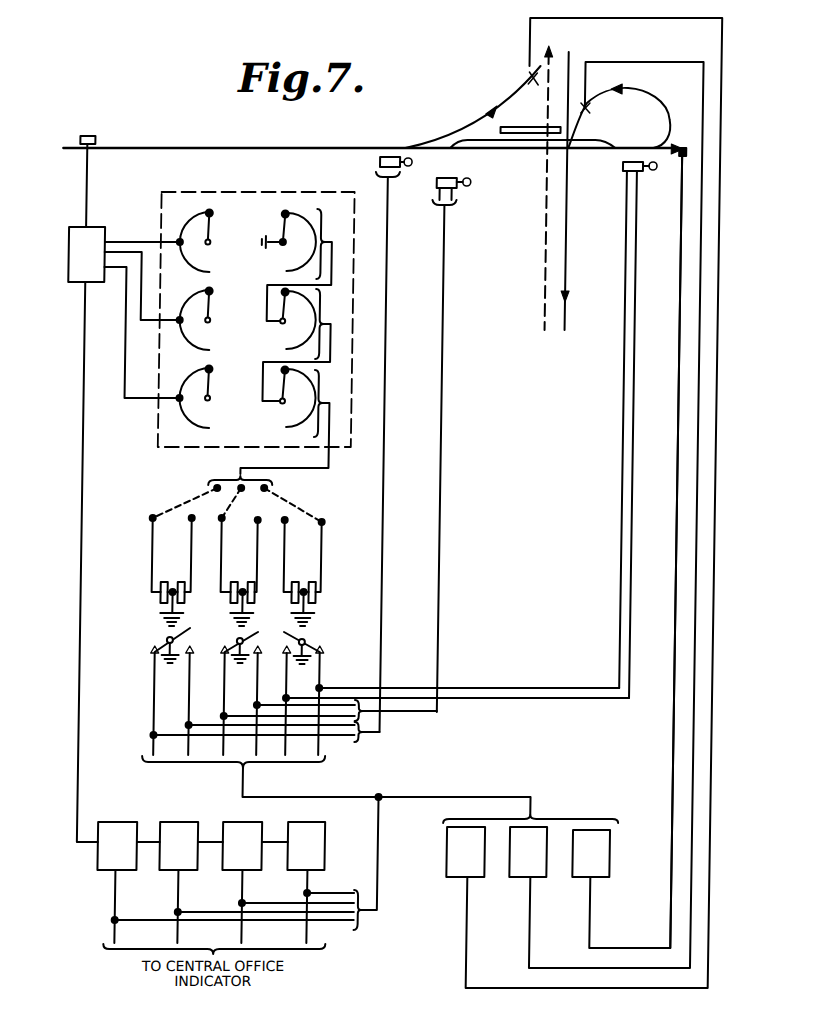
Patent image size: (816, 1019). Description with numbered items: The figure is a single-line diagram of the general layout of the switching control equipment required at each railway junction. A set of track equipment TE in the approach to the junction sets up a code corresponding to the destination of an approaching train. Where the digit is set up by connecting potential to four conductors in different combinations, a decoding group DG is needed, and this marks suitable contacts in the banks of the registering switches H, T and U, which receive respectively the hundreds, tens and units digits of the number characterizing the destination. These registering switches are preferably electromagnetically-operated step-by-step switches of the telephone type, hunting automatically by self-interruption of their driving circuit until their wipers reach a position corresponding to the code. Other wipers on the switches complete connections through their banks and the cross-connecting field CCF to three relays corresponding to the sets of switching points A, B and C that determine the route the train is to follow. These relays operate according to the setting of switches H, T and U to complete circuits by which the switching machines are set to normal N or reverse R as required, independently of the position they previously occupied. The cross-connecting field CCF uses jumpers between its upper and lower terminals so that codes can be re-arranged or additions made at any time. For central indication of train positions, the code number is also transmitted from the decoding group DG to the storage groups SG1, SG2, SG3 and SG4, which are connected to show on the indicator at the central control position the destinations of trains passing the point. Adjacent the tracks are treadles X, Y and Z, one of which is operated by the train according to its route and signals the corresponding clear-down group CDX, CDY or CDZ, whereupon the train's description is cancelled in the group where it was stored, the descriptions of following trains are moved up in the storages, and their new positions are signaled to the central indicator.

The track equipment TE is at (88, 478).
The decoding group DG is at (125, 312).
The registering switch H is at (254, 265).
The registering switch T is at (253, 345).
The registering switch U is at (252, 420).
The cross-connecting field CCF is at (242, 499).
The normal N is at (212, 551).
The reverse R is at (249, 551).
The storage group SG1 is at (117, 835).
The storage group SG2 is at (178, 835).
The storage group SG3 is at (242, 835).
The storage group SG4 is at (306, 835).
The clear-down group CDX is at (574, 503).
The clear-down group CDY is at (597, 515).
The clear-down group CDZ is at (618, 550).
The set of switching points A is at (390, 426).
The set of switching points B is at (448, 434).
The set of switching points C is at (636, 414).
The treadle X is at (472, 107).
The treadle Y is at (619, 116).
The treadle Z is at (673, 538).